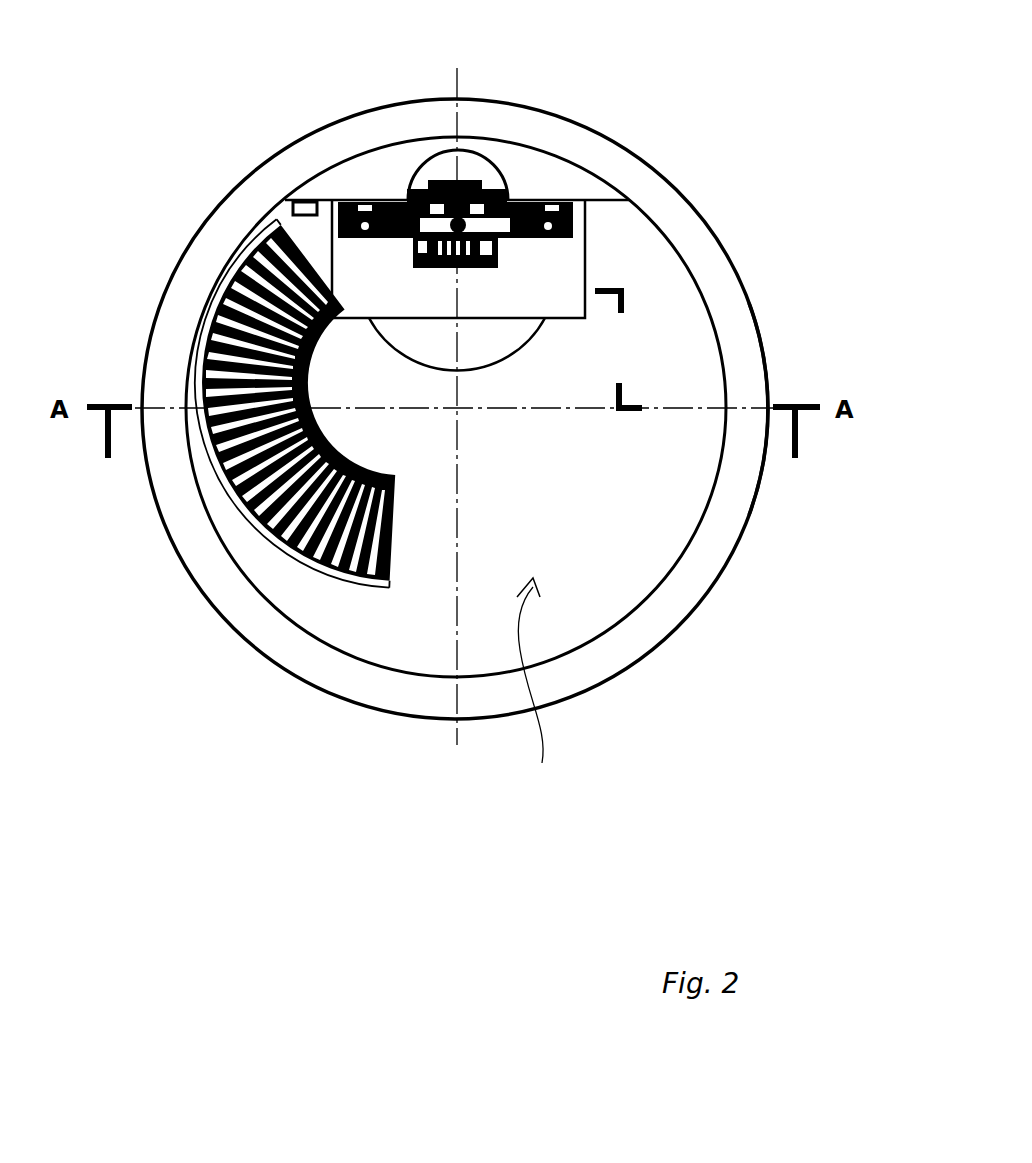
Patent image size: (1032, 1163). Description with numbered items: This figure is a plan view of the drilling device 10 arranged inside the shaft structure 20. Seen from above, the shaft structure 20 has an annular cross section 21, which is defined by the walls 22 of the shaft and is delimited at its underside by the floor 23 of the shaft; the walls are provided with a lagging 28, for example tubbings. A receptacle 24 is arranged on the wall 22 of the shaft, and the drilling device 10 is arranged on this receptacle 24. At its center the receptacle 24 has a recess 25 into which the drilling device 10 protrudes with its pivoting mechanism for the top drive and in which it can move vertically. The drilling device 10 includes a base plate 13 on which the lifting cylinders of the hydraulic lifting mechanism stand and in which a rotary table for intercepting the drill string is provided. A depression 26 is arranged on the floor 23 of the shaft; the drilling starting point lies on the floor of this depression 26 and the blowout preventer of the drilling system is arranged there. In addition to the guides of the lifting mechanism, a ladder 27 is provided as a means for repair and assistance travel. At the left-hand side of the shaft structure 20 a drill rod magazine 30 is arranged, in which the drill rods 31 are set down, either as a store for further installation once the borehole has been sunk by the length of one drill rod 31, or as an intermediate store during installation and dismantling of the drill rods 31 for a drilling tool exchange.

The drilling device 10 is at (550, 302).
The base plate 13 is at (420, 306).
The shaft structure 20 is at (716, 679).
The annular cross section 21 is at (534, 690).
The wall of the shaft 22 is at (727, 368).
The floor of the shaft 23 is at (637, 520).
The receptacle 24 is at (562, 183).
The recess 25 is at (472, 163).
The depression 26 is at (500, 343).
The ladder 27 is at (293, 200).
The lagging 28 is at (748, 388).
The drill rod magazine 30 is at (315, 567).
The drill rods 31 is at (243, 493).